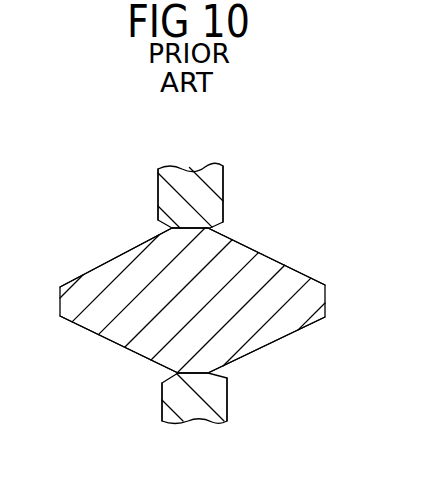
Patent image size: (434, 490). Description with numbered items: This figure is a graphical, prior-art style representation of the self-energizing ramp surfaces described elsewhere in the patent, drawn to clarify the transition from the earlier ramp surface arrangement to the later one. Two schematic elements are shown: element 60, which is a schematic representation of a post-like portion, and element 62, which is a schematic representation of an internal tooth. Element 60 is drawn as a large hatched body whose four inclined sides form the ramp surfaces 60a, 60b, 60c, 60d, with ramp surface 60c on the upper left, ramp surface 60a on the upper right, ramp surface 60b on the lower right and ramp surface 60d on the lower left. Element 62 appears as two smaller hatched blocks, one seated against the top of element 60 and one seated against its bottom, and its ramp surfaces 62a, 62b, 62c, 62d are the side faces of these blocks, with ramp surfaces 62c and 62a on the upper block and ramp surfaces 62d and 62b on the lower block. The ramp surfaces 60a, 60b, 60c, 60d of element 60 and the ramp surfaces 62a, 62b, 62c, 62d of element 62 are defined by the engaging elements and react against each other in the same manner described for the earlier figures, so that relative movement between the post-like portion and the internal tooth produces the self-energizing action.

The element 60 is at (311, 264).
The ramp surface 60a is at (257, 250).
The ramp surface 60b is at (289, 334).
The ramp surface 60c is at (115, 258).
The ramp surface 60d is at (99, 336).
The element 62 is at (238, 160).
The ramp surface 62a is at (224, 220).
The ramp surface 62b is at (228, 378).
The ramp surface 62c is at (158, 219).
The ramp surface 62d is at (166, 378).